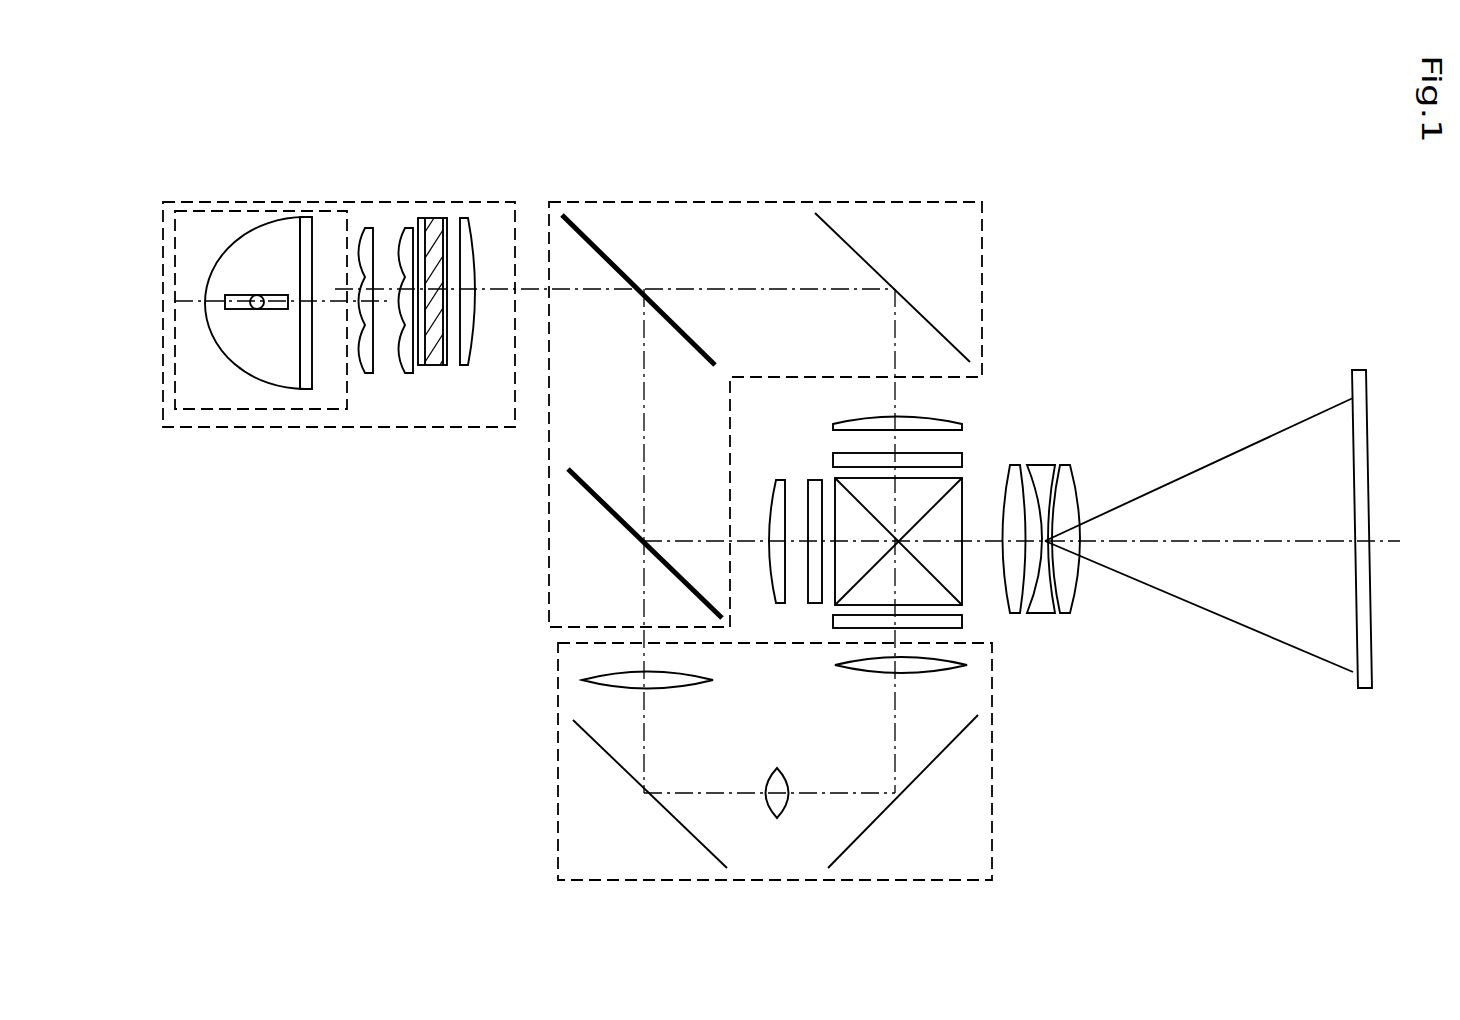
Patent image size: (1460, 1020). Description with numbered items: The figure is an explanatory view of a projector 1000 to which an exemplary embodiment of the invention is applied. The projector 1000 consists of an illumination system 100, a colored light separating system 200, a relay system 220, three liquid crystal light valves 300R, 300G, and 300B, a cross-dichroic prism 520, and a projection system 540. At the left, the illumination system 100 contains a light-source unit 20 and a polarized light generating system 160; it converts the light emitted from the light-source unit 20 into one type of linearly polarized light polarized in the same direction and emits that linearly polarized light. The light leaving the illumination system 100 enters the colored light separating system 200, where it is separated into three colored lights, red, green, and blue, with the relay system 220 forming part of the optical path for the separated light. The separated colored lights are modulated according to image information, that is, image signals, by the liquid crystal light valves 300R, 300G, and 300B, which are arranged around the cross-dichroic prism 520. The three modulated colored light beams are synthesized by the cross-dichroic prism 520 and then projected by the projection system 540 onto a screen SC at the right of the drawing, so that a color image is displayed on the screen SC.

The projector 1000 is at (235, 84).
The illumination system 100 is at (266, 200).
The light-source unit 20 is at (263, 410).
The polarized light generating system 160 is at (432, 366).
The colored light separating system 200 is at (622, 200).
The relay system 220 is at (556, 673).
The liquid crystal light valve 300R is at (832, 462).
The liquid crystal light valve 300G is at (815, 478).
The liquid crystal light valve 300B is at (832, 621).
The cross-dichroic prism 520 is at (963, 478).
The projection system 540 is at (1043, 465).
The screen SC is at (1357, 370).